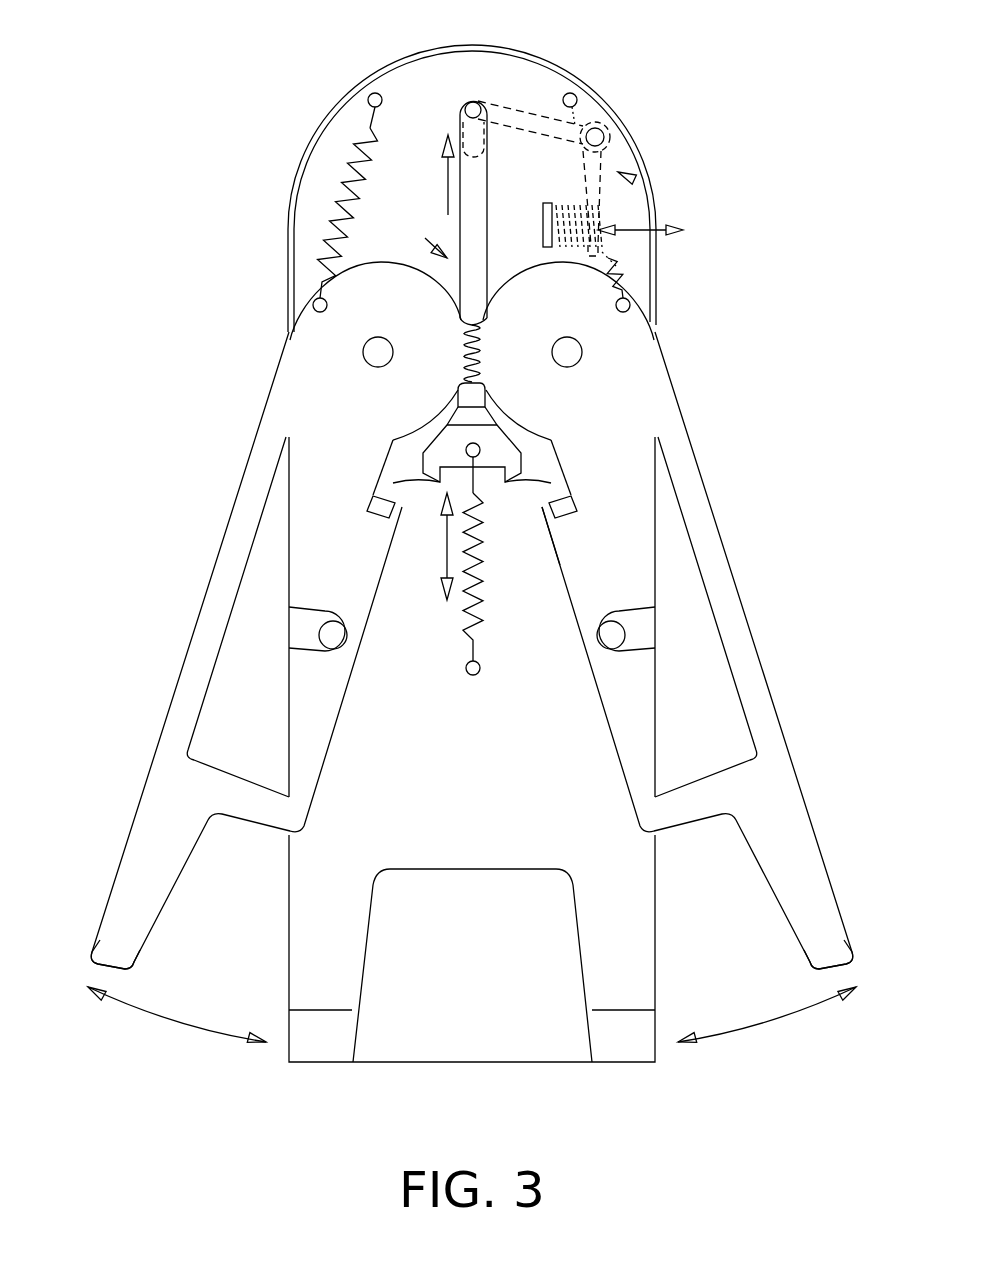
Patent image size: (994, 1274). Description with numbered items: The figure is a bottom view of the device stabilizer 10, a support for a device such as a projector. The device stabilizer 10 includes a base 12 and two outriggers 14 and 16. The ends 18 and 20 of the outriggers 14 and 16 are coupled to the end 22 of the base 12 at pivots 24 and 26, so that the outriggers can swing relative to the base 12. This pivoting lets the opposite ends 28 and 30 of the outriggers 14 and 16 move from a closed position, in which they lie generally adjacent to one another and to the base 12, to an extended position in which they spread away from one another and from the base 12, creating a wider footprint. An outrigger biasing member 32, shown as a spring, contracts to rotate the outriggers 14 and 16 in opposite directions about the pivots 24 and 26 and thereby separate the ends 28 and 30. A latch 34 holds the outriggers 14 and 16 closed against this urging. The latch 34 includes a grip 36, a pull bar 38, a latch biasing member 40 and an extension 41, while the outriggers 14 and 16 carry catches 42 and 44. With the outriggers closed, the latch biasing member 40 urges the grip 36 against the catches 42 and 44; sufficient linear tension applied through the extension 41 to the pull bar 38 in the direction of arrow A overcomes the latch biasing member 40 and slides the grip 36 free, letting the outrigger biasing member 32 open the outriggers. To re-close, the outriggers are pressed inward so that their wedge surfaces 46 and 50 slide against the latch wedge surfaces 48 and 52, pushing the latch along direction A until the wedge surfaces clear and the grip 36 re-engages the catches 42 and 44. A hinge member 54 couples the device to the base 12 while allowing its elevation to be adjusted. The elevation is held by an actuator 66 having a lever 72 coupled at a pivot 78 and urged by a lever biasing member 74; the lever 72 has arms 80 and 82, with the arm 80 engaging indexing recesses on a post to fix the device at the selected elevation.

The device stabilizer 10 is at (175, 394).
The base 12 is at (633, 919).
The outrigger 14 is at (786, 782).
The outrigger 16 is at (158, 782).
The end of outrigger 18 is at (543, 277).
The end of outrigger 20 is at (388, 276).
The end of base 22 is at (481, 46).
The pivot 24 is at (570, 366).
The pivot 26 is at (375, 366).
The end of outrigger 28 is at (104, 952).
The end of outrigger 30 is at (840, 952).
The outrigger biasing member 32 is at (355, 168).
The latch 34 is at (425, 238).
The grip 36 is at (473, 482).
The pull bar 38 is at (477, 208).
The latch biasing member 40 is at (480, 598).
The extension 41 is at (465, 104).
The catch 42 is at (571, 498).
The catch 44 is at (373, 498).
The outrigger wedge surface 46 is at (540, 505).
The latch wedge surface 48 is at (553, 478).
The outrigger wedge surface 50 is at (403, 505).
The latch wedge surface 52 is at (393, 478).
The hinge member 54 is at (450, 1040).
The actuator 66 is at (632, 178).
The lever 72 is at (612, 158).
The lever biasing member 74 is at (545, 229).
The pivot 78 is at (610, 128).
The arm 80 is at (533, 124).
The arm 82 is at (613, 207).